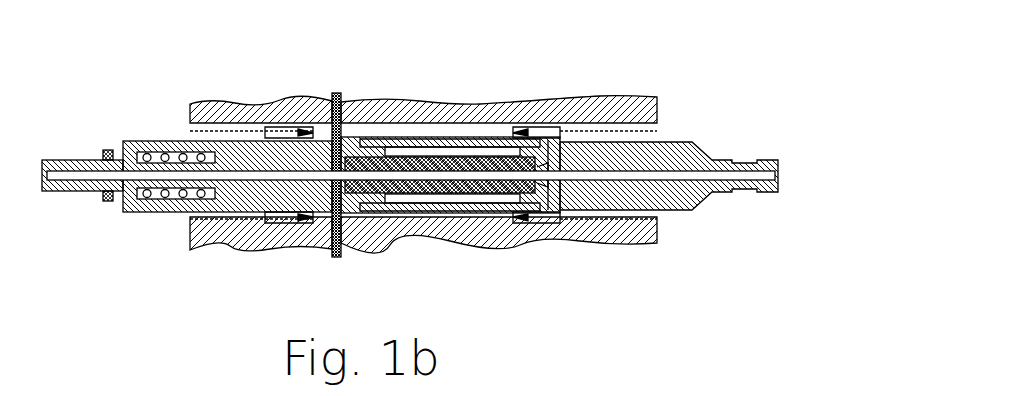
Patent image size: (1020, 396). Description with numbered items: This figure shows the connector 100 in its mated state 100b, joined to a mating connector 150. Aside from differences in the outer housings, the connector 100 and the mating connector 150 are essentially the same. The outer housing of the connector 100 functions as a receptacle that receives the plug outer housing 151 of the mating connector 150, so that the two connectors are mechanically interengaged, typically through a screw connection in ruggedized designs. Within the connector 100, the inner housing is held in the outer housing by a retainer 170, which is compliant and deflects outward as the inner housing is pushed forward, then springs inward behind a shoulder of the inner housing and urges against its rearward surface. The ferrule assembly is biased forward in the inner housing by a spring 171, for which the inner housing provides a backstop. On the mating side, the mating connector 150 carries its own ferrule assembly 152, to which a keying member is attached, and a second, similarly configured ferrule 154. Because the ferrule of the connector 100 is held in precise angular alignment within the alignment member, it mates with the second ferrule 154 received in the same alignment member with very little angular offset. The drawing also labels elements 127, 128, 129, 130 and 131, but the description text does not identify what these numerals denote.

The connector 100 is at (196, 84).
The mated state of the connector 100b is at (330, 36).
The retainer 170 is at (268, 100).
The spring 171 is at (152, 213).
The plug outer housing 151 is at (428, 122).
The ferrule holder 131 is at (474, 138).
The latch 128 is at (526, 125).
The stop flange 129 is at (570, 125).
The receptacle housing 127 is at (620, 99).
The mating connector 150 is at (668, 70).
The second ferrule 154 is at (497, 185).
The lower latch 130 is at (545, 222).
The ferrule assembly of the mating connector 152 is at (608, 197).